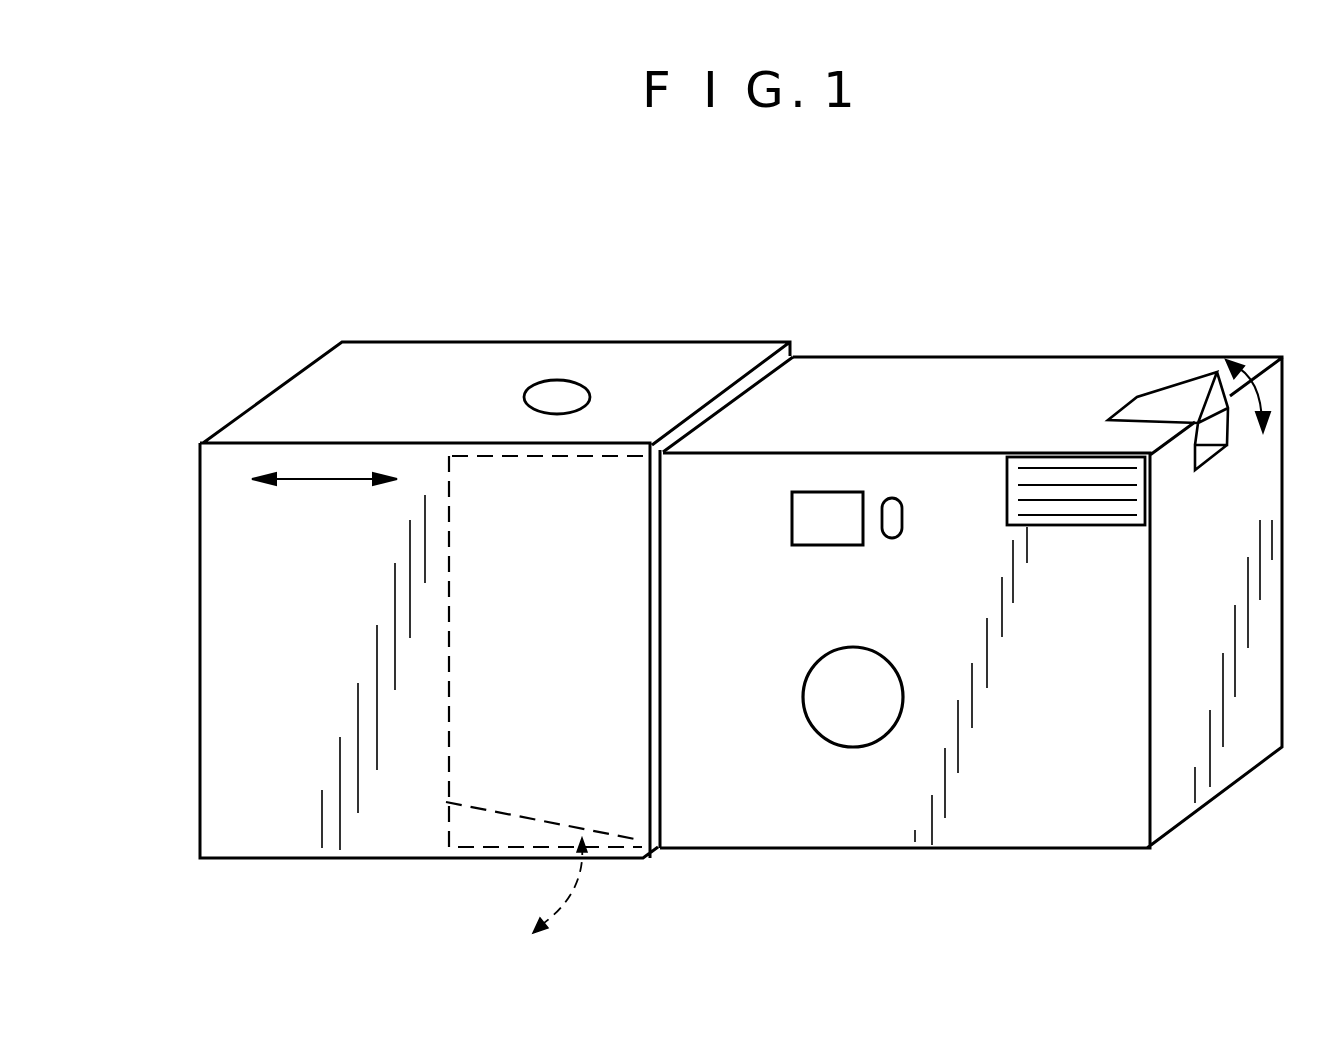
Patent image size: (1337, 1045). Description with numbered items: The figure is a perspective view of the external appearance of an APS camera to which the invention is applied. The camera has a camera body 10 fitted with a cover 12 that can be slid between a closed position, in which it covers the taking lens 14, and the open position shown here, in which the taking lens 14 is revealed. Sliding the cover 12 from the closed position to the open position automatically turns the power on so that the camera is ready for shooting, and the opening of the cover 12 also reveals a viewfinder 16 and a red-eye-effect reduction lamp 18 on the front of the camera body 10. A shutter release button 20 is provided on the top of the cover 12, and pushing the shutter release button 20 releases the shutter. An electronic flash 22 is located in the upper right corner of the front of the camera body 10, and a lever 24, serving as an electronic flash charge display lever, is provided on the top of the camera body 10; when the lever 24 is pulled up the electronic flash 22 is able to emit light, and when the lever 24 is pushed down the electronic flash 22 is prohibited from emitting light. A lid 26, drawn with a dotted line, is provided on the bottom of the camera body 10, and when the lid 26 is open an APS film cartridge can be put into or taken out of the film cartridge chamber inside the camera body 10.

The camera body 10 is at (950, 377).
The cover 12 is at (230, 612).
The taking lens 14 is at (843, 727).
The viewfinder 16 is at (820, 530).
The red-eye-effect reduction lamp 18 is at (888, 535).
The shutter release button 20 is at (575, 388).
The electronic flash 22 is at (1105, 508).
The lever 24 is at (1210, 390).
The lid 26 is at (478, 827).